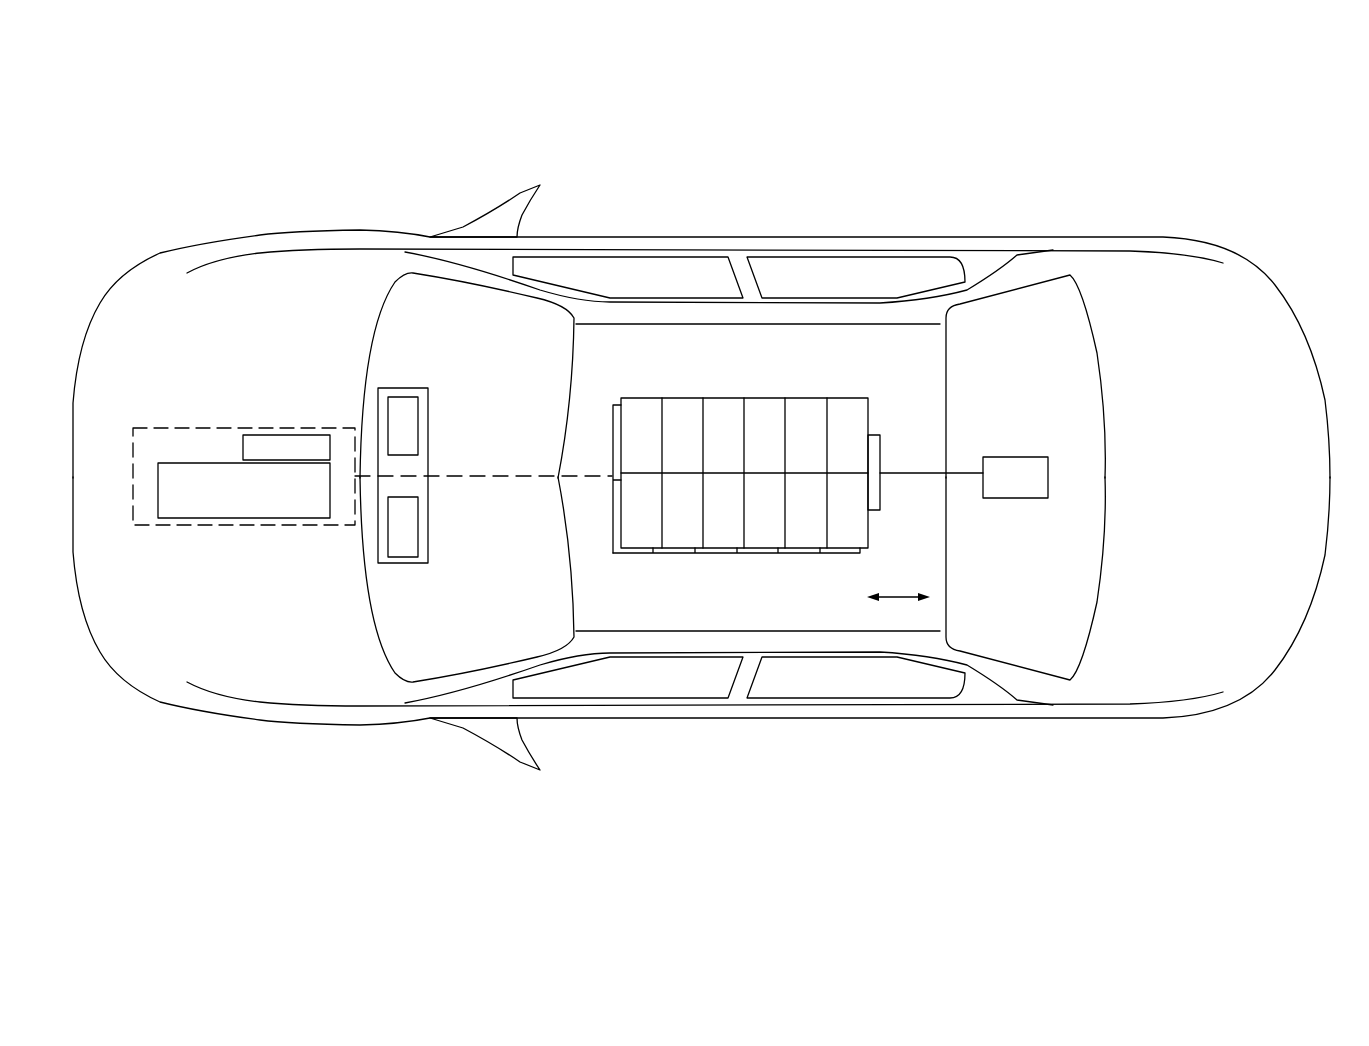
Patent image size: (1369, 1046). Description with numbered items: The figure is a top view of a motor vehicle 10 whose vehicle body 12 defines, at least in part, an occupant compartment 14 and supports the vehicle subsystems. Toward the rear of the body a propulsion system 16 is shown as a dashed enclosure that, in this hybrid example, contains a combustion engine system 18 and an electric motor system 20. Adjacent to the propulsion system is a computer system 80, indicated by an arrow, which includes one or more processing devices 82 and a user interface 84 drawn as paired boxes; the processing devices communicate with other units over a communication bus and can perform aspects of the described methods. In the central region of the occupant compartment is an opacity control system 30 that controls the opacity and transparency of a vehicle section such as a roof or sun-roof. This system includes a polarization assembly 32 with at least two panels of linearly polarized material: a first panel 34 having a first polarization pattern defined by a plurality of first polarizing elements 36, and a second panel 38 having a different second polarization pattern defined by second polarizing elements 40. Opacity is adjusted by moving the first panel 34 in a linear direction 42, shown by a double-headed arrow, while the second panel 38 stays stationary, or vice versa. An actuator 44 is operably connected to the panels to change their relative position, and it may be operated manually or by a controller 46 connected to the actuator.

The motor vehicle 10 is at (192, 110).
The vehicle body 12 is at (740, 224).
The occupant compartment 14 is at (817, 607).
The propulsion system 16 is at (205, 427).
The combustion engine system 18 is at (275, 503).
The electric motor system 20 is at (270, 443).
The opacity control system 30 is at (970, 394).
The polarization assembly 32 is at (711, 558).
The first panel 34 is at (847, 398).
The first polarizing elements 36 is at (690, 433).
The second panel 38 is at (612, 467).
The second polarizing elements 40 is at (807, 553).
The linear direction 42 is at (898, 598).
The actuator 44 is at (880, 448).
The controller 46 is at (1040, 475).
The computer system 80 is at (430, 333).
The processing devices 82 is at (410, 408).
The user interface 84 is at (412, 542).